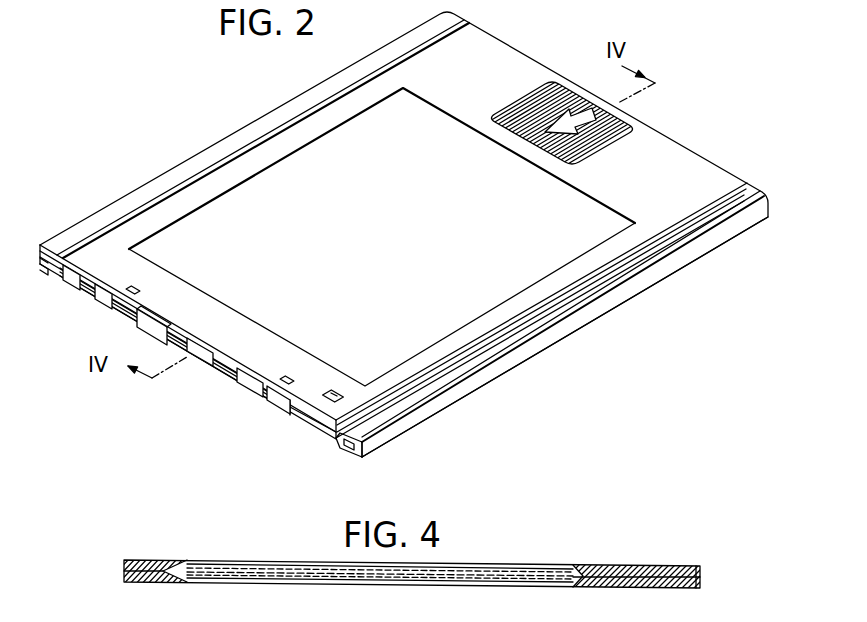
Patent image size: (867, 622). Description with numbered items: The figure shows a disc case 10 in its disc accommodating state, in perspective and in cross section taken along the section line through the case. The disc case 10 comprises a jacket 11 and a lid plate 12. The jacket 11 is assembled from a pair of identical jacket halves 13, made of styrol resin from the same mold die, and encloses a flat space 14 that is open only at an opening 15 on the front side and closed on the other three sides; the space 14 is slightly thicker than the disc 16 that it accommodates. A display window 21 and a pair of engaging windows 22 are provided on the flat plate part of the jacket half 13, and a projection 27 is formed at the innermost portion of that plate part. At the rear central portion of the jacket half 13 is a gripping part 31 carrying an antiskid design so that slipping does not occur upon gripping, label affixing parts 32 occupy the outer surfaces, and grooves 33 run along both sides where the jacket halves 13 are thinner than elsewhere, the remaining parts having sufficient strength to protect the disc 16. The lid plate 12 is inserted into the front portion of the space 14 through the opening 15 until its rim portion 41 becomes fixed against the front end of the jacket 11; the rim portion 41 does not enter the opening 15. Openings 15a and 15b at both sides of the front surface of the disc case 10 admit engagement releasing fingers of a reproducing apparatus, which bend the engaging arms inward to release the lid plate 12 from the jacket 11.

In FIG. 2, the disc case 10 is at (205, 91).
In FIG. 4, the disc case 10 is at (186, 545).
In FIG. 2, the jacket 11 is at (673, 131).
In FIG. 4, the jacket 11 is at (218, 556).
In FIG. 2, the lid plate 12 is at (242, 396).
In FIG. 4, the lid plate 12 is at (118, 571).
In FIG. 2, the jacket half 13 is at (695, 163).
In FIG. 4, the jacket half 13 is at (613, 566).
In FIG. 4, the space 14 is at (298, 572).
In FIG. 2, the opening 15 is at (273, 394).
In FIG. 2, the opening 15a is at (351, 450).
In FIG. 2, the opening 15b is at (47, 263).
In FIG. 4, the disc 16 is at (529, 575).
In FIG. 2, the display window 21 is at (334, 392).
In FIG. 2, the engaging window 22 is at (144, 288).
In FIG. 4, the projection 27 is at (662, 575).
In FIG. 2, the gripping part 31 is at (559, 96).
In FIG. 2, the label affixing part 32 is at (437, 337).
In FIG. 2, the groove 33 is at (311, 114).
In FIG. 2, the rim portion 41 is at (147, 325).